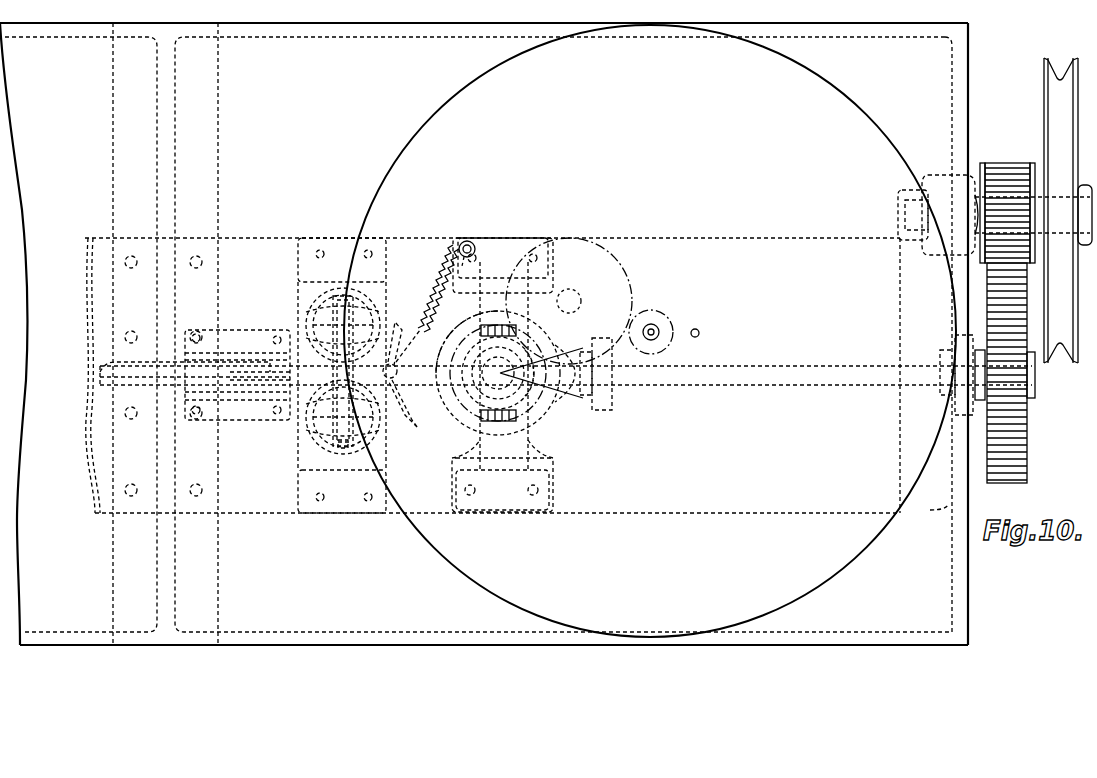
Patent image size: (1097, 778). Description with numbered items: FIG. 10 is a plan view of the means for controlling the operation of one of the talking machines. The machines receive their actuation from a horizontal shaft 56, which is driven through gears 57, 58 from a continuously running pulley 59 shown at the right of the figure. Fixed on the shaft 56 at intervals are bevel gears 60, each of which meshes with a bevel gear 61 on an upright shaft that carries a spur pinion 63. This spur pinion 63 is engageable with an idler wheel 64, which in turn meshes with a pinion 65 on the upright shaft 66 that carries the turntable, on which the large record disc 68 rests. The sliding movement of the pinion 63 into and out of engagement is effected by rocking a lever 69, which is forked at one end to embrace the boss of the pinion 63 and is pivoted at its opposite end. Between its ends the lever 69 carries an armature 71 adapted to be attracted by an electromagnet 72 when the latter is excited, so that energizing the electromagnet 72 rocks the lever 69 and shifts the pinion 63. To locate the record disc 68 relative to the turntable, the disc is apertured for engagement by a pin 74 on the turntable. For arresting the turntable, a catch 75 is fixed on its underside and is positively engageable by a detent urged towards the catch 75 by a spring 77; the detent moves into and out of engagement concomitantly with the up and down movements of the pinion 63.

The shaft 56 is at (768, 364).
The gear 57 is at (1020, 442).
The gear 58 is at (1017, 150).
The pulley 59 is at (1058, 106).
The bevel gear 60 is at (556, 410).
The bevel gear 61 is at (560, 445).
The spur pinion 63 is at (456, 418).
The idler wheel 64 is at (632, 283).
The pinion 65 is at (670, 318).
The upright shaft 66 is at (655, 340).
The record disc 68 is at (650, 331).
The lever 69 is at (273, 383).
The armature 71 is at (312, 465).
The electromagnet 72 is at (380, 300).
The pin 74 is at (699, 332).
The catch 75 is at (403, 363).
The spring 77 is at (446, 276).